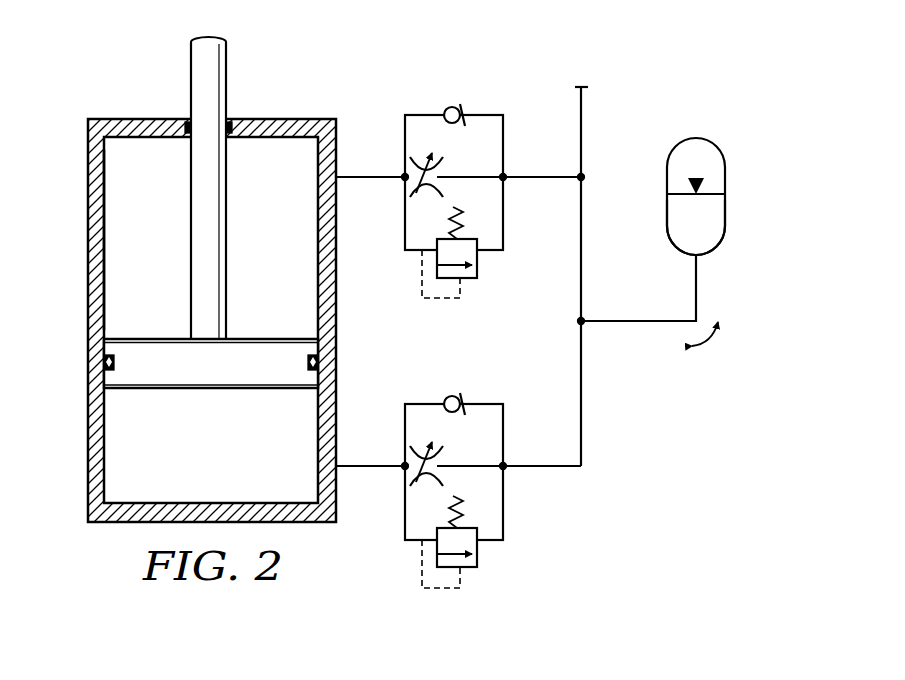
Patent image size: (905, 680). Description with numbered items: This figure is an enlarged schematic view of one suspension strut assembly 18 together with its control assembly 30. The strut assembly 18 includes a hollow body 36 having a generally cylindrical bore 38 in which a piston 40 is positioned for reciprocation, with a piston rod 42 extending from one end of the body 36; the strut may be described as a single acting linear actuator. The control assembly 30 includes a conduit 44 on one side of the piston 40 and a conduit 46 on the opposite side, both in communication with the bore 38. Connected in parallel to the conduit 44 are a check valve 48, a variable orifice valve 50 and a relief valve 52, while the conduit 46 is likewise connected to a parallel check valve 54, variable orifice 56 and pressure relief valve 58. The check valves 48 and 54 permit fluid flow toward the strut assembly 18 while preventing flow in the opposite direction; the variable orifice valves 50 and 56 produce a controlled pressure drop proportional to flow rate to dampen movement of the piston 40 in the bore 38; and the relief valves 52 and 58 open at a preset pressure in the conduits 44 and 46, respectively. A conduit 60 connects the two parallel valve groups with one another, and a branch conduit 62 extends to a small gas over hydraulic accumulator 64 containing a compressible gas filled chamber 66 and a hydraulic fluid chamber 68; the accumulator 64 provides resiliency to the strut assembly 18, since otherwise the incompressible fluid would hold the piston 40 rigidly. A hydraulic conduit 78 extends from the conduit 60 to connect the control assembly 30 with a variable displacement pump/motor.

The suspension strut assembly 18 is at (84, 76).
The control assembly 30 is at (686, 464).
The hollow body 36 is at (88, 271).
The bore 38 is at (96, 208).
The piston 40 is at (188, 373).
The piston rod 42 is at (226, 75).
The conduit 44 is at (378, 177).
The conduit 46 is at (378, 466).
The check valve 48 is at (461, 108).
The variable orifice valve 50 is at (447, 171).
The relief valve 52 is at (478, 271).
The check valve 54 is at (461, 397).
The variable orifice 56 is at (447, 461).
The pressure relief valve 58 is at (478, 560).
The conduit 60 is at (582, 217).
The branch conduit 62 is at (645, 319).
The gas over hydraulic accumulator 64 is at (727, 206).
The compressible gas filled chamber 66 is at (697, 149).
The hydraulic fluid chamber 68 is at (706, 237).
The hydraulic conduit 78 is at (582, 137).